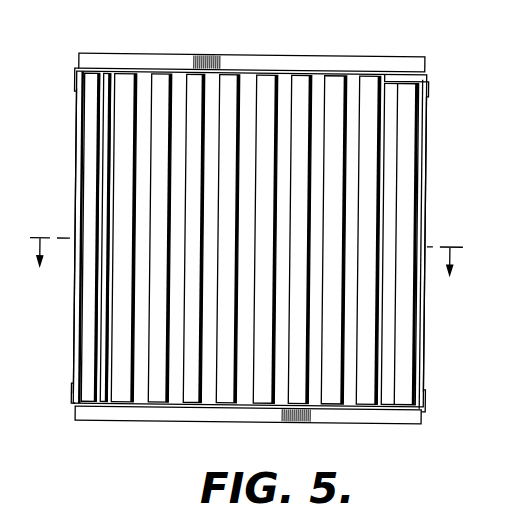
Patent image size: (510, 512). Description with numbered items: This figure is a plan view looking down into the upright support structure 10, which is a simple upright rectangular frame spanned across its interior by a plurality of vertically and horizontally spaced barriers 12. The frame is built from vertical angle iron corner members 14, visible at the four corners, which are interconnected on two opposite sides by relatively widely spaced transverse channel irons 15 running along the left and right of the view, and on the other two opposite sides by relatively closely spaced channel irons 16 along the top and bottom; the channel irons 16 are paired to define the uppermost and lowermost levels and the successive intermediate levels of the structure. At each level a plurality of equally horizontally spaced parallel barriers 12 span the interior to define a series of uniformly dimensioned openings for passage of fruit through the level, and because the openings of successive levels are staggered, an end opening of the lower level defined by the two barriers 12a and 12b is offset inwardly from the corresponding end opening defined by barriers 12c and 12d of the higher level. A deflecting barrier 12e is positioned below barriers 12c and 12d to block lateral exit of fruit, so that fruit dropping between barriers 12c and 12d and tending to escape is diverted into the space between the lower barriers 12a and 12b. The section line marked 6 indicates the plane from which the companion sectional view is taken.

The upright support structure 10 is at (205, 68).
The barriers 12 is at (228, 93).
The barrier 12a is at (121, 400).
The barrier 12b is at (196, 403).
The barrier 12c is at (86, 354).
The barrier 12d is at (155, 400).
The deflecting barrier 12e is at (106, 400).
The vertical angle iron corner members 14 is at (76, 80).
The transverse channel irons 15 is at (75, 170).
The channel irons 16 is at (333, 62).
The section line 6- 6 is at (247, 280).